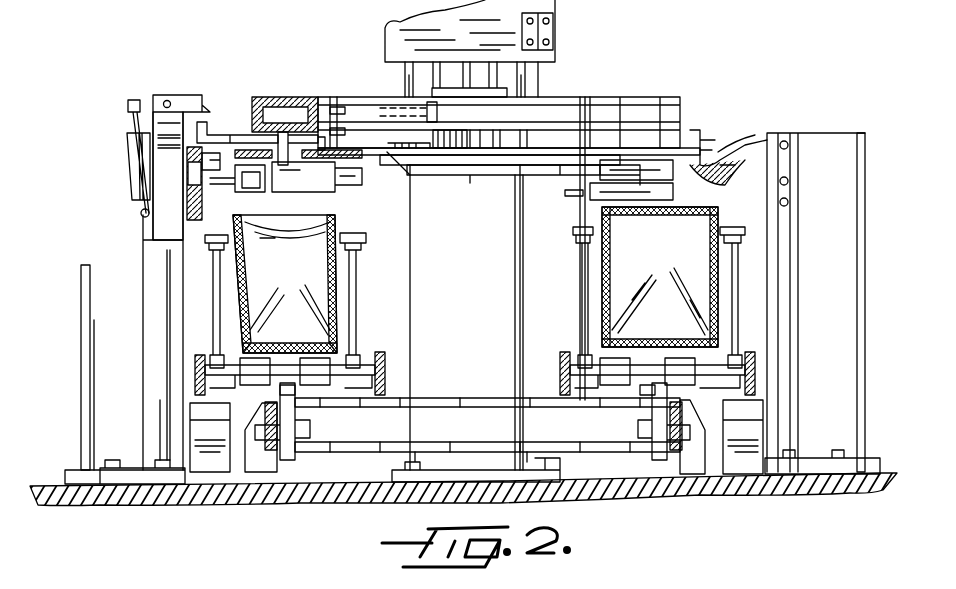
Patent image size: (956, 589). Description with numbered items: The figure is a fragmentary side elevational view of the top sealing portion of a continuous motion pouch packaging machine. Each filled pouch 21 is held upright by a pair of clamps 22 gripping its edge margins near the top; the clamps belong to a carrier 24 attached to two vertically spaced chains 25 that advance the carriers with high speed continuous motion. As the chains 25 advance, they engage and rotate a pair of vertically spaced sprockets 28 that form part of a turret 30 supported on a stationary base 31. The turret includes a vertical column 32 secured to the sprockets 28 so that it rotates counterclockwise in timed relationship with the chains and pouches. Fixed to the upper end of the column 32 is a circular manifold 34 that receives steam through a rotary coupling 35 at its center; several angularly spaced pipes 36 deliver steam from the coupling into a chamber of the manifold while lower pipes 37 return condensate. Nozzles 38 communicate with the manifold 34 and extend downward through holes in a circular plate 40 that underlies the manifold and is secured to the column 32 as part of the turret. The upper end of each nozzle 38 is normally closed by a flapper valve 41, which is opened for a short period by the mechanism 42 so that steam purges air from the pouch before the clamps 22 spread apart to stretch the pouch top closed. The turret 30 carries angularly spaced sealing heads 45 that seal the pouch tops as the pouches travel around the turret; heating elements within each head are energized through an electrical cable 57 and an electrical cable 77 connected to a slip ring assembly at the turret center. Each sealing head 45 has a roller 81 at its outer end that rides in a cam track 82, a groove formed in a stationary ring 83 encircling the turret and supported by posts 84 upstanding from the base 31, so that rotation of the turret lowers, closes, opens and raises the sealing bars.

The pouch 21 is at (225, 288).
The clamp 22 is at (215, 236).
The carrier 24 is at (230, 354).
The chain 25 is at (316, 440).
The sprocket 28 is at (418, 400).
The turret 30 is at (625, 97).
The base 31 is at (165, 495).
The column 32 is at (415, 287).
The manifold 34 is at (283, 97).
The rotary coupling 35 is at (432, 62).
The pipe 36 is at (340, 107).
The lower pipe 37 is at (398, 165).
The nozzle 38 is at (302, 166).
The circular plate 40 is at (470, 175).
The flapper valve 41 is at (267, 97).
The valve opening mechanism 42 is at (210, 108).
The sealing head 45 is at (273, 200).
The electrical cable 57 is at (565, 193).
The electrical cable 77 is at (590, 170).
The roller 81 is at (190, 162).
The cam track 82 is at (132, 180).
The stationary ring 83 is at (183, 213).
The post 84 is at (86, 297).